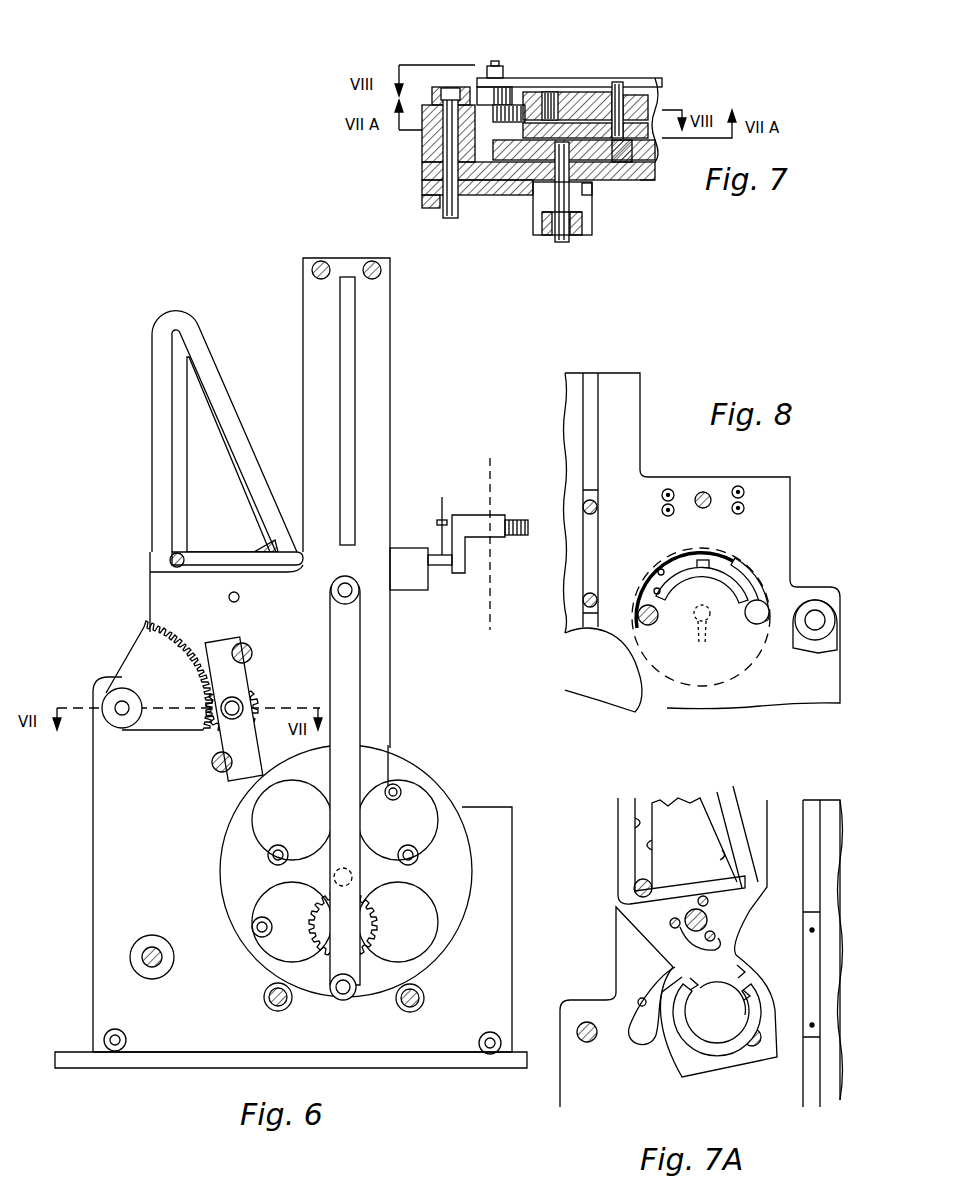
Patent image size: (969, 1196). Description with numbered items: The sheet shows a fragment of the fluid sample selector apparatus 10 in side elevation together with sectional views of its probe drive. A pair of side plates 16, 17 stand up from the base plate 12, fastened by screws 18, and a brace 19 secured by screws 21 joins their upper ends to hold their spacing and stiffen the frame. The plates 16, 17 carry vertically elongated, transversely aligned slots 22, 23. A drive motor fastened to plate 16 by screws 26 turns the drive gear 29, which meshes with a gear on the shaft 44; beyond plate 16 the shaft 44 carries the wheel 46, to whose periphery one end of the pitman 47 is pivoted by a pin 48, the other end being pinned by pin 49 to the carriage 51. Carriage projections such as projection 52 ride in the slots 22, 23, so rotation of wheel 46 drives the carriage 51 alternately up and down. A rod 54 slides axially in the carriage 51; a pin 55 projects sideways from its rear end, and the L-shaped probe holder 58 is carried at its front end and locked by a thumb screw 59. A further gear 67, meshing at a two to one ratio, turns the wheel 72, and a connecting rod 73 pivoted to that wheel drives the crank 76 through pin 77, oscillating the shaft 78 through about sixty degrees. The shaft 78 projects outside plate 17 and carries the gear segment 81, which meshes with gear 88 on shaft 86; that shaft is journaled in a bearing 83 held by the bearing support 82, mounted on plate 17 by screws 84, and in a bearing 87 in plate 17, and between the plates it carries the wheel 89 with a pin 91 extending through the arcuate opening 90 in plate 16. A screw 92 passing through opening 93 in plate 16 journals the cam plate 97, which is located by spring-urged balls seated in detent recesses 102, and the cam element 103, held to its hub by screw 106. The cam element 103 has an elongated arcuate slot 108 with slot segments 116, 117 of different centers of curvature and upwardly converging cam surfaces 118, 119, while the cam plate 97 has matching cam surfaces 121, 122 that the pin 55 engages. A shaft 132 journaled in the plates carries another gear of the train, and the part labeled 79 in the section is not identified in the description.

In FIG. 6, the fluid sample selector apparatus 10 is at (68, 392).
In FIG. 6, the base plate 12 is at (462, 1062).
In FIG. 7, the side plate 16 is at (650, 103).
In FIG. 8, the side plate 16 is at (778, 475).
In FIG. 7A, the side plate 16 is at (790, 802).
In FIG. 6, the side plate 17 is at (505, 955).
In FIG. 7, the side plate 17 is at (652, 172).
In FIG. 6, the screws 18 is at (124, 1034).
In FIG. 6, the brace 19 is at (346, 262).
In FIG. 6, the screws 21 is at (380, 276).
In FIG. 8, the vertically elongated slot 22 is at (592, 442).
In FIG. 7A, the vertically elongated slot 22 is at (812, 822).
In FIG. 6, the vertically elongated slot 23 is at (352, 456).
In FIG. 6, the screws 26 is at (288, 1008).
In FIG. 6, the drive gear 29 is at (372, 928).
In FIG. 6, the shaft 44 is at (336, 868).
In FIG. 6, the wheel 46 is at (445, 812).
In FIG. 6, the pitman 47 is at (338, 810).
In FIG. 6, the pin 48 is at (343, 998).
In FIG. 6, the pin 49 is at (330, 592).
In FIG. 6, the carriage 51 is at (404, 548).
In FIG. 8, the projection 52 is at (590, 530).
In FIG. 7A, the projection 52 is at (806, 945).
In FIG. 6, the rod 54 is at (228, 556).
In FIG. 6, the pin 55 is at (170, 556).
In FIG. 6, the L-shaped probe holder 58 is at (508, 512).
In FIG. 6, the thumb screw 59 is at (439, 517).
In FIG. 6, the gear 67 is at (390, 800).
In FIG. 8, the wheel 72 is at (622, 648).
In FIG. 7, the connecting rod 73 is at (600, 78).
In FIG. 7, the crank 76 is at (470, 95).
In FIG. 8, the crank 76 is at (810, 640).
In FIG. 7, the pin 77 is at (494, 60).
In FIG. 6, the shaft 78 is at (127, 703).
In FIG. 7, the shaft 78 is at (443, 148).
In FIG. 8, the shaft 78 is at (815, 610).
In FIG. 7, the block 79 is at (464, 125).
In FIG. 6, the gear segment 81 is at (136, 648).
In FIG. 7, the gear segment 81 is at (490, 195).
In FIG. 6, the bearing support 82 is at (260, 668).
In FIG. 7, the bearing support 82 is at (534, 228).
In FIG. 6, the bearing 83 is at (243, 722).
In FIG. 7, the bearing 83 is at (560, 242).
In FIG. 6, the screws 84 is at (272, 620).
In FIG. 6, the shaft 86 is at (233, 697).
In FIG. 7, the shaft 86 is at (566, 240).
In FIG. 8, the shaft 86 is at (705, 640).
In FIG. 7, the bearing 87 is at (590, 180).
In FIG. 6, the gear 88 is at (256, 705).
In FIG. 7, the gear 88 is at (582, 205).
In FIG. 7, the wheel 89 is at (634, 150).
In FIG. 8, the arcuate opening 90 is at (738, 560).
In FIG. 7A, the arcuate opening 90 is at (640, 1000).
In FIG. 7, the pin 91 is at (620, 84).
In FIG. 8, the pin 91 is at (652, 627).
In FIG. 7A, the pin 91 is at (634, 888).
In FIG. 6, the screw 92 is at (228, 597).
In FIG. 8, the screw 92 is at (712, 492).
In FIG. 7A, the screw 92 is at (703, 918).
In FIG. 8, the opening 93 is at (700, 512).
In FIG. 6, the cam plate 97 is at (218, 445).
In FIG. 7, the cam plate 97 is at (585, 95).
In FIG. 7A, the cam plate 97 is at (665, 808).
In FIG. 8, the detent recesses 102 is at (661, 509).
In FIG. 6, the cam element 103 is at (153, 400).
In FIG. 7, the cam element 103 is at (552, 92).
In FIG. 7A, the cam element 103 is at (618, 855).
In FIG. 7A, the screw 106 is at (718, 950).
In FIG. 8, the elongated arcuate slot 108 is at (685, 620).
In FIG. 7A, the elongated arcuate slot 108 is at (745, 1018).
In FIG. 8, the arcuate slot segment 116 is at (668, 570).
In FIG. 7A, the arcuate slot segment 116 is at (740, 985).
In FIG. 8, the arcuate slot segment 117 is at (703, 558).
In FIG. 7A, the arcuate slot segment 117 is at (680, 978).
In FIG. 7A, the rear cam surface 118 is at (630, 822).
In FIG. 7A, the front cam surface 119 is at (728, 810).
In FIG. 7A, the cam surface 121 is at (668, 845).
In FIG. 7A, the cam surface 122 is at (722, 856).
In FIG. 6, the shaft 132 is at (152, 946).